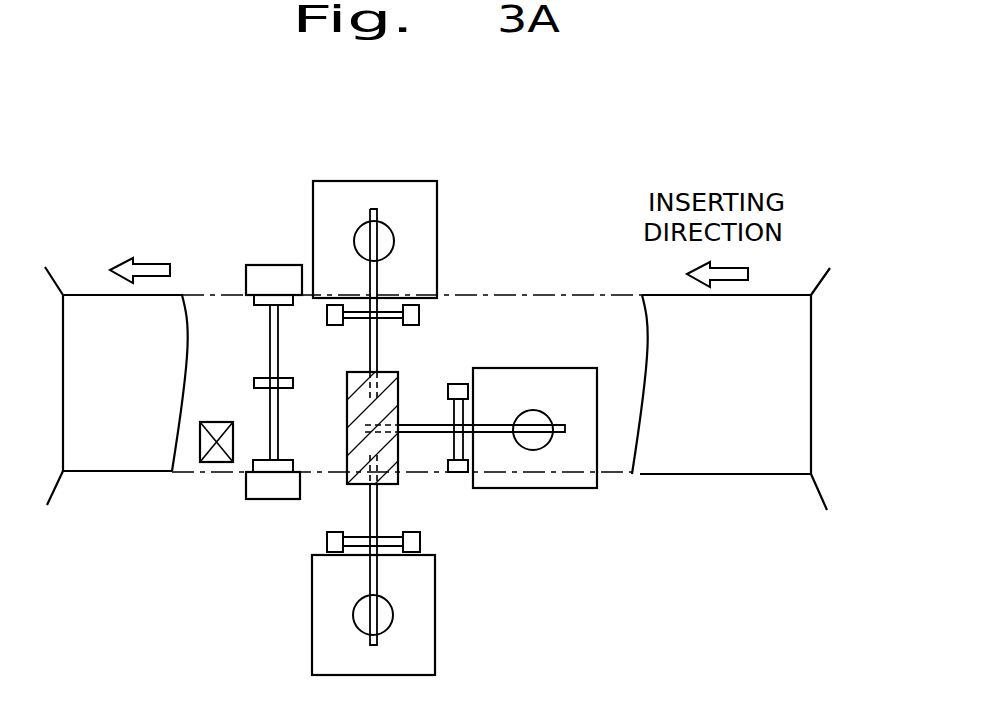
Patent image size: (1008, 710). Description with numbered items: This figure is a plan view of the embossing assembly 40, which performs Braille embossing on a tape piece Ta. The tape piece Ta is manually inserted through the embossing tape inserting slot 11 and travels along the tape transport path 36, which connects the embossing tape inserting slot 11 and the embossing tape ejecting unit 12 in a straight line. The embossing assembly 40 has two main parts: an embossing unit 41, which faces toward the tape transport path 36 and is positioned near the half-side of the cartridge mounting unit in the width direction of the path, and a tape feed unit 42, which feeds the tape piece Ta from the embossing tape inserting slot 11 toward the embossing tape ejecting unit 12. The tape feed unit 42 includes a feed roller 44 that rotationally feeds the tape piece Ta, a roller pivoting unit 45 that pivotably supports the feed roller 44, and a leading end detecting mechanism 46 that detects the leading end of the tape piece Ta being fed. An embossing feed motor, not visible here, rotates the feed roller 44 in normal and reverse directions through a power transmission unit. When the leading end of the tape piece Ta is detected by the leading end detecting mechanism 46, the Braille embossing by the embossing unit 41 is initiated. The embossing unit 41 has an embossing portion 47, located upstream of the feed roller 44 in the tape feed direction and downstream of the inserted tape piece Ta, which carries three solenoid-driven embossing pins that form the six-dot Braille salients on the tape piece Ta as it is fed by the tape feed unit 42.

The embossing tape inserting slot 11 is at (818, 272).
The embossing tape ejecting unit 12 is at (58, 277).
The tape piece Ta is at (713, 477).
The tape transport path 36 is at (560, 293).
The embossing assembly 40 is at (430, 160).
The embossing unit 41 is at (408, 488).
The tape feed unit 42 is at (231, 432).
The feed roller 44 is at (254, 467).
The roller pivoting unit 45 is at (278, 485).
The leading end detecting mechanism 46 is at (221, 420).
The embossing portion 47 is at (377, 382).